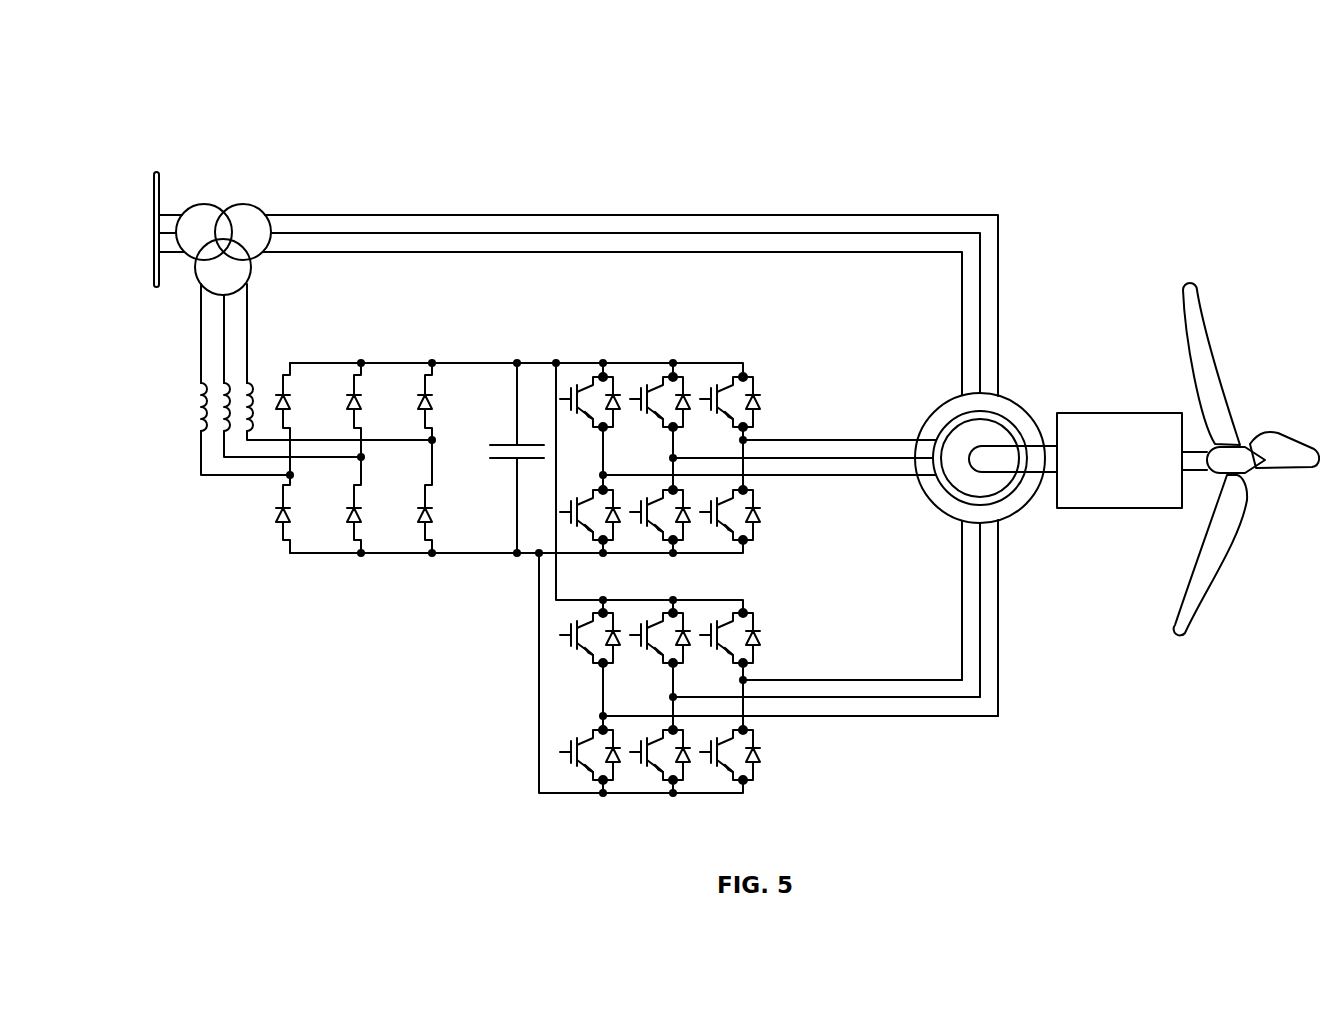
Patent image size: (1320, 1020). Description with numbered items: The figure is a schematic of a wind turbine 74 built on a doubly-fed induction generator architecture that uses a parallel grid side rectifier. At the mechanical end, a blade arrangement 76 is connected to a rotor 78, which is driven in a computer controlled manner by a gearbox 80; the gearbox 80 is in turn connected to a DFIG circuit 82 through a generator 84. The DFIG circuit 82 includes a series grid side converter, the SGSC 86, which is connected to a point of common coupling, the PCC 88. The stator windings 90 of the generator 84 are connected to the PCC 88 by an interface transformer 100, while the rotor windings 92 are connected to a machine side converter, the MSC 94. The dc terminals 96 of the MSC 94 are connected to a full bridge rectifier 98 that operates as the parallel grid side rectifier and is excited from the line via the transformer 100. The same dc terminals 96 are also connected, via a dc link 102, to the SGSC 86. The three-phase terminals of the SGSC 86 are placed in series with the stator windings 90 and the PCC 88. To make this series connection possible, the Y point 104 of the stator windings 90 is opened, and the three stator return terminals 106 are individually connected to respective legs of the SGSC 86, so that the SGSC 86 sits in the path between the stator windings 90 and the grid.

The wind turbine 74 is at (200, 94).
The blade arrangement 76 is at (1250, 418).
The rotor 78 is at (1192, 470).
The gearbox 80 is at (1112, 413).
The DFIG circuit 82 is at (450, 701).
The generator 84 is at (1025, 401).
The SGSC 86 is at (753, 590).
The point of common coupling 88 is at (152, 180).
The stator windings 90 is at (1005, 278).
The rotor windings 92 is at (900, 484).
The MSC 94 is at (753, 350).
The dc terminals 96 is at (603, 362).
The full bridge rectifier 98 is at (378, 345).
The interface transformer 100 is at (190, 283).
The dc link 102 is at (538, 362).
The Y point 104 is at (1003, 533).
The stator return terminals 106 is at (905, 721).